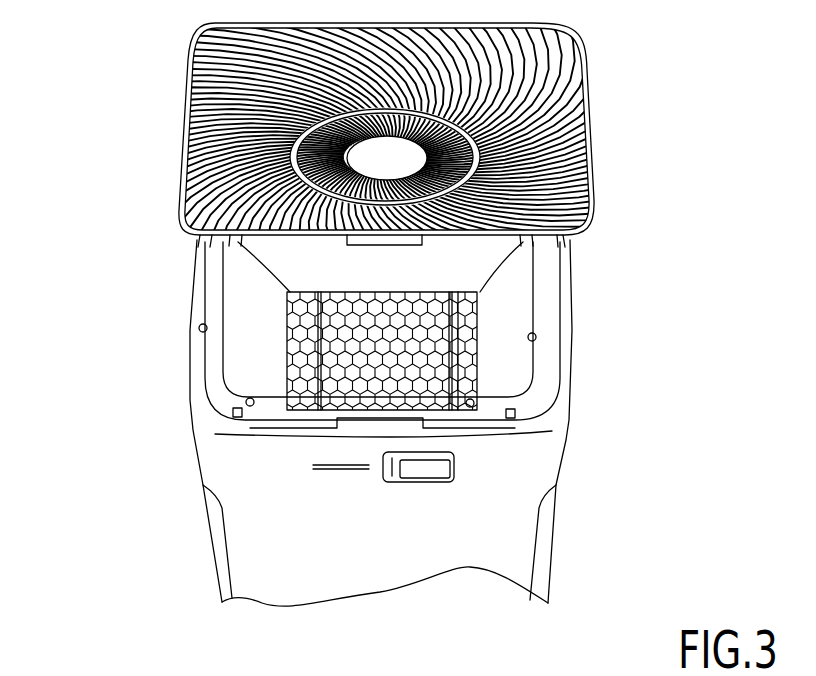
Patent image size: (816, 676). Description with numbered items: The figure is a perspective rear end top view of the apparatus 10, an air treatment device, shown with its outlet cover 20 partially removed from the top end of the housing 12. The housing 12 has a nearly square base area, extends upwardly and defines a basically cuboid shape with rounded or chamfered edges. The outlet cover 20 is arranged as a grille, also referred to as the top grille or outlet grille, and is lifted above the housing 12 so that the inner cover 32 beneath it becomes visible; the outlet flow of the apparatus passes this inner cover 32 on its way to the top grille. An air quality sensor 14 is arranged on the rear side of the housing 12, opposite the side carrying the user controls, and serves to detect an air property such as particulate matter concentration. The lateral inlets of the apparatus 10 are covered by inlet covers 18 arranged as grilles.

The apparatus 10 is at (137, 181).
The housing 12 is at (255, 505).
The air quality sensor 14 is at (440, 468).
The inlet cover 18 is at (541, 535).
The outlet cover 20 is at (560, 112).
The inner cover 32 is at (360, 337).